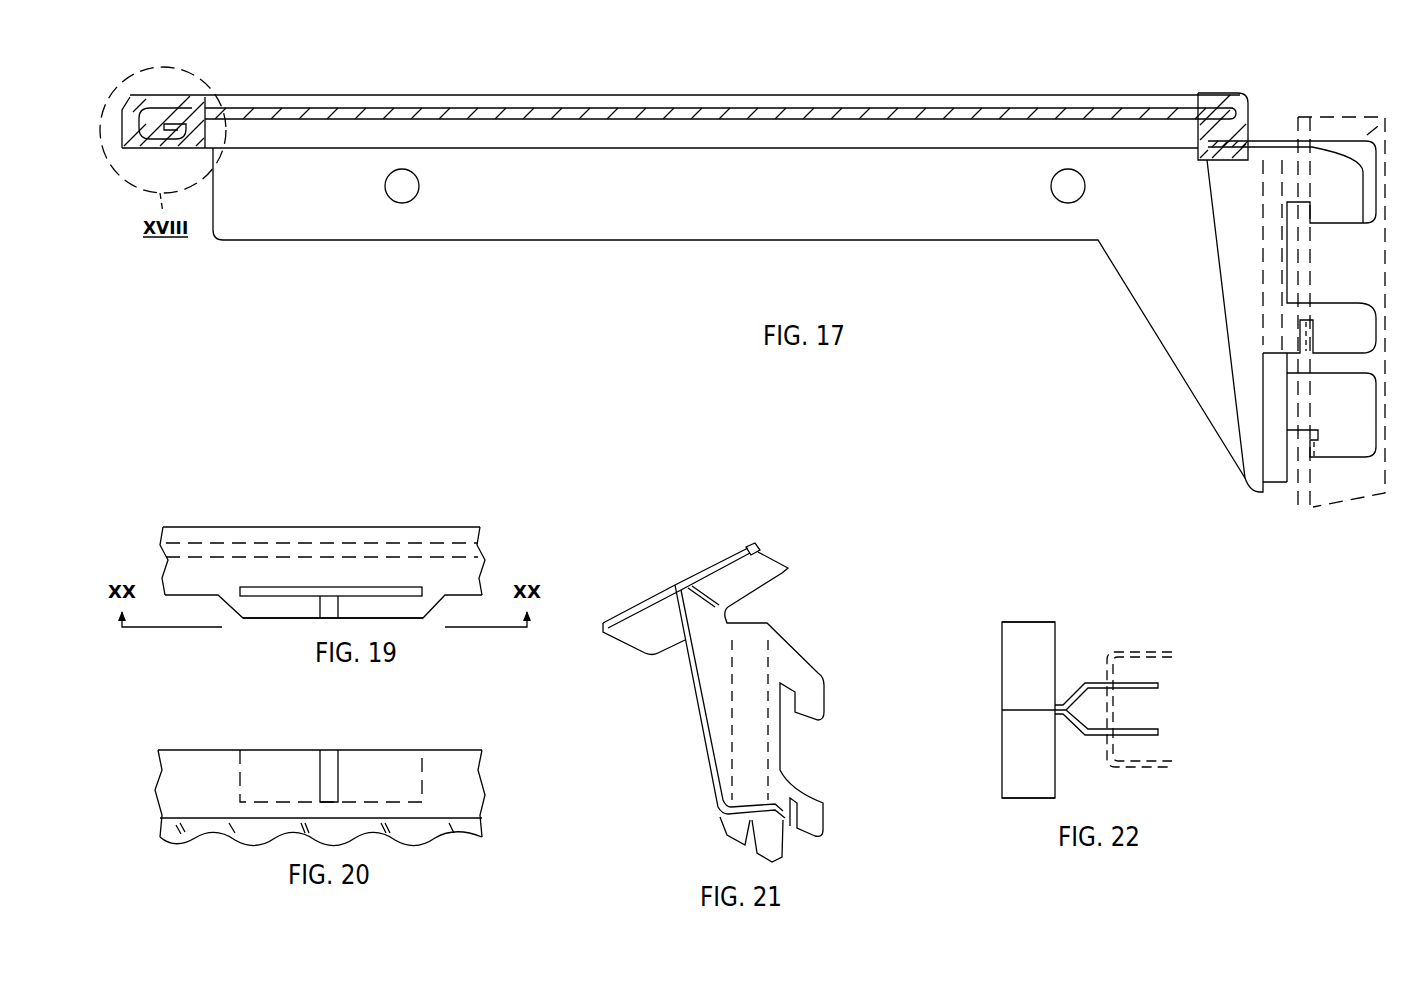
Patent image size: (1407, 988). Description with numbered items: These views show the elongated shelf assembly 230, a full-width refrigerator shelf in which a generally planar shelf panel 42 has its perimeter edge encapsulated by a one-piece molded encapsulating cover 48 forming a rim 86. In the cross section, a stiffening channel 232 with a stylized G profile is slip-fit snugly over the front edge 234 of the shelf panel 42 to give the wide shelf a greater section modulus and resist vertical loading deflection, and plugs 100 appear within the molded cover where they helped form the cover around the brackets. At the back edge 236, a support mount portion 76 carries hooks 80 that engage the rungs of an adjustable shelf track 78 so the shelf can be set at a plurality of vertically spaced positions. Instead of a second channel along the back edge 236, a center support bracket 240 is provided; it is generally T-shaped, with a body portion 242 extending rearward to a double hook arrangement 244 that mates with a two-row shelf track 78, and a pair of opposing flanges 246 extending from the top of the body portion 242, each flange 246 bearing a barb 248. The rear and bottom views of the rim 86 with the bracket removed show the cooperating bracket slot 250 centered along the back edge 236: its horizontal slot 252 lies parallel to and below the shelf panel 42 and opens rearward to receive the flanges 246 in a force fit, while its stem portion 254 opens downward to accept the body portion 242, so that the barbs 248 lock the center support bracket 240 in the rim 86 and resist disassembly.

In FIG. 17, the elongated shelf assembly 230 is at (505, 276).
In FIG. 17, the rim 86 is at (750, 135).
In FIG. 19, the rim 86 is at (222, 530).
In FIG. 20, the rim 86 is at (473, 790).
In FIG. 17, the shelf panel 42 is at (883, 113).
In FIG. 19, the shelf panel 42 is at (478, 552).
In FIG. 20, the shelf panel 42 is at (465, 838).
In FIG. 17, the encapsulating cover 48 is at (705, 232).
In FIG. 17, the front edge 234 is at (130, 96).
In FIG. 17, the stiffening channel 232 is at (140, 137).
In FIG. 17, the plug 100 is at (419, 184).
In FIG. 17, the back edge 236 is at (1237, 113).
In FIG. 17, the hooks 80 is at (1335, 148).
In FIG. 17, the support mount portion 76 is at (1275, 392).
In FIG. 17, the adjustable shelf track 78 is at (1383, 118).
In FIG. 22, the adjustable shelf track 78 is at (1138, 648).
In FIG. 19, the horizontal slot 252 is at (380, 590).
In FIG. 20, the horizontal slot 252 is at (400, 745).
In FIG. 19, the stem portion 254 is at (330, 604).
In FIG. 20, the stem portion 254 is at (325, 770).
In FIG. 19, the bracket slot 250 is at (300, 607).
In FIG. 21, the center support bracket 240 is at (672, 790).
In FIG. 21, the body portion 242 is at (700, 703).
In FIG. 21, the flanges 246 is at (693, 572).
In FIG. 22, the flanges 246 is at (1007, 750).
In FIG. 21, the barb 248 is at (752, 545).
In FIG. 22, the barb 248 is at (1005, 622).
In FIG. 21, the double hook arrangement 244 is at (808, 852).
In FIG. 22, the double hook arrangement 244 is at (1175, 710).